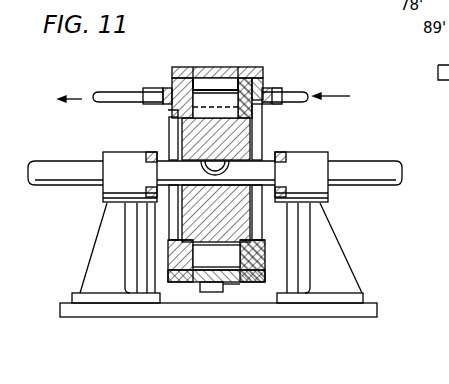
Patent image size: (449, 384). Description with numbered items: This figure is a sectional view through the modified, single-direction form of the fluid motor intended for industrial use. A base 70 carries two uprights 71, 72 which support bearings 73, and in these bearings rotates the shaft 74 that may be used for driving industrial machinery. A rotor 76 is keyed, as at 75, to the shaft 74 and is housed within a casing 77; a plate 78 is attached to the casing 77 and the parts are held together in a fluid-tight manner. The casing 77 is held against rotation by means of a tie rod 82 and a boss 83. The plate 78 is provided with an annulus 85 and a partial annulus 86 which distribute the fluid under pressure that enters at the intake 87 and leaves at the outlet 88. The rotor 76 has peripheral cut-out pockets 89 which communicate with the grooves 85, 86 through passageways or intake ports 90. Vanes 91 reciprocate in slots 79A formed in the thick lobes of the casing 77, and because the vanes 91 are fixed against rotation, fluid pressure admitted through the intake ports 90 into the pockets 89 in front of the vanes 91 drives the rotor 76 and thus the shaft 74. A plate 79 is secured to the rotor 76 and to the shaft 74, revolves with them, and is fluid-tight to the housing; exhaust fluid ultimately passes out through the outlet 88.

The base 70 is at (172, 310).
The upright 71 is at (97, 269).
The upright 72 is at (342, 277).
The bearing 73 is at (110, 162).
The shaft 74 is at (388, 173).
The key 75 is at (213, 172).
The rotor 76 is at (238, 128).
The casing 77 is at (188, 68).
The plate 78 is at (173, 127).
The plate 79 is at (238, 67).
The slot 79A is at (197, 85).
The tie rod 82 is at (203, 292).
The boss 83 is at (235, 286).
The annulus 85 is at (172, 82).
The partial annulus 86 is at (262, 84).
The intake 87 is at (305, 92).
The outlet 88 is at (118, 93).
The pocket 89 is at (172, 117).
The intake port 90 is at (249, 70).
The vane 91 is at (262, 92).